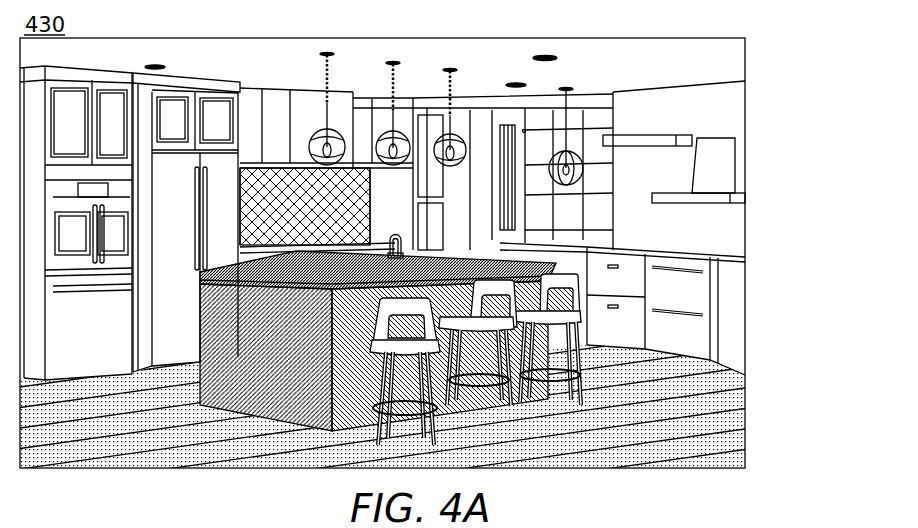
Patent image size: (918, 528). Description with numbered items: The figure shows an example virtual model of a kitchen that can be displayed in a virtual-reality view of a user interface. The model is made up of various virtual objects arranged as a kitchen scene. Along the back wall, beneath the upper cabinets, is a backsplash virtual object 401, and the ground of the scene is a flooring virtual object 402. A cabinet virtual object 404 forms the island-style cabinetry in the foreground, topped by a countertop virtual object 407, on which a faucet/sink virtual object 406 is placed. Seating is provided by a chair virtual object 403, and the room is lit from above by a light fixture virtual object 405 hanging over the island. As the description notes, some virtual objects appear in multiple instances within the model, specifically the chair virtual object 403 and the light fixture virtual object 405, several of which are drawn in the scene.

The backsplash virtual object 401 is at (317, 203).
The flooring virtual object 402 is at (682, 430).
The chair virtual object 403 is at (437, 389).
The cabinet virtual object 404 is at (352, 332).
The light fixture virtual object 405 is at (408, 145).
The faucet/sink virtual object 406 is at (449, 253).
The countertop virtual object 407 is at (297, 277).